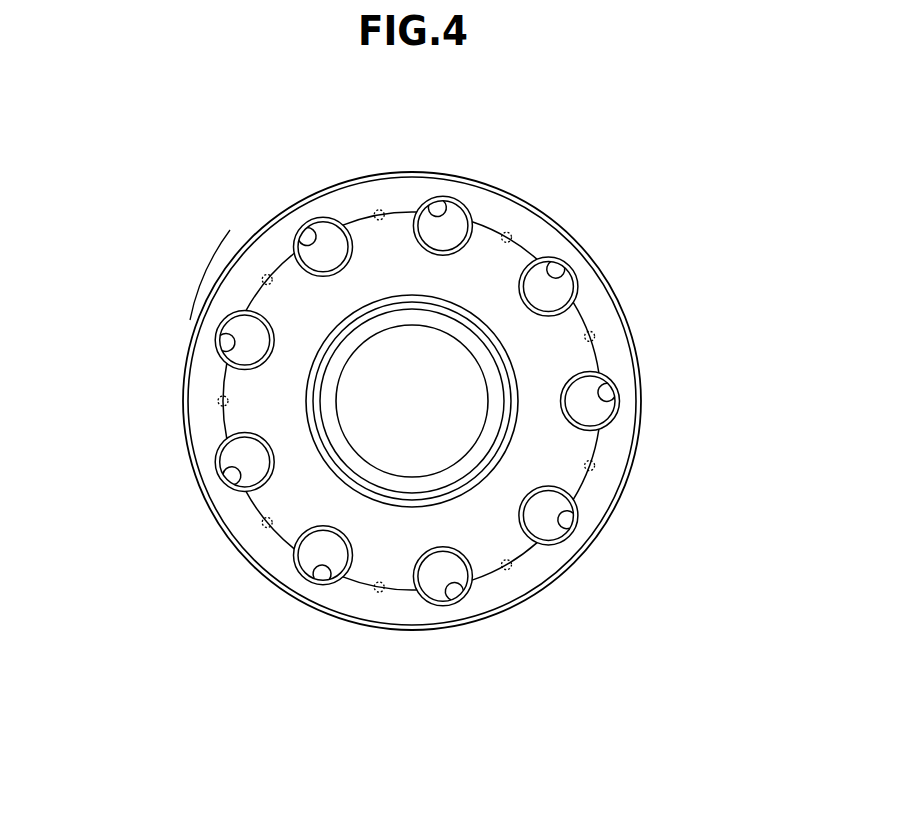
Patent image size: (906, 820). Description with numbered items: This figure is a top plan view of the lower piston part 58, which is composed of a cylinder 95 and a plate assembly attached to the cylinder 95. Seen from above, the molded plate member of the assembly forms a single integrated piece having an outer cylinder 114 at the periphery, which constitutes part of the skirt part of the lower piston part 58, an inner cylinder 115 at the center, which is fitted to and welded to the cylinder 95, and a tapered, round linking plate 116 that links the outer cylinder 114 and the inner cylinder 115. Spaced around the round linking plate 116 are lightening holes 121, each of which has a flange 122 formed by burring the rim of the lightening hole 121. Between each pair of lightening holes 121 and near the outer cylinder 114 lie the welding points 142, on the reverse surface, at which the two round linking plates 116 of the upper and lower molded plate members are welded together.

The lower piston part 58 is at (188, 226).
The outer cylinder 114 is at (222, 276).
The inner cylinder 115 is at (515, 368).
The round linking plate 116 is at (235, 512).
The cylinder 95 is at (468, 460).
The lightening hole 121 is at (220, 341).
The flange 122 is at (242, 312).
The welding point 142 is at (218, 401).